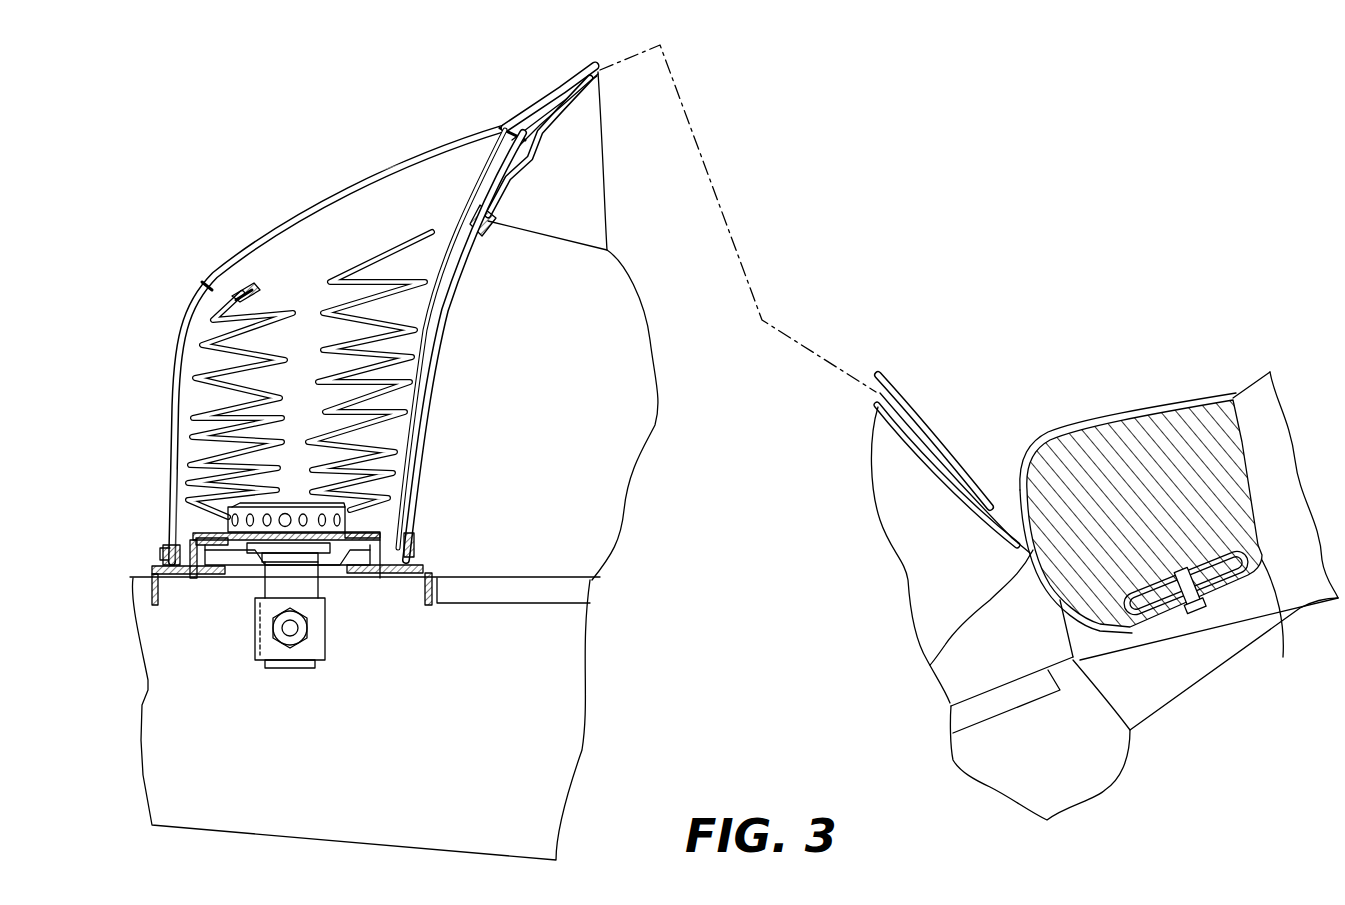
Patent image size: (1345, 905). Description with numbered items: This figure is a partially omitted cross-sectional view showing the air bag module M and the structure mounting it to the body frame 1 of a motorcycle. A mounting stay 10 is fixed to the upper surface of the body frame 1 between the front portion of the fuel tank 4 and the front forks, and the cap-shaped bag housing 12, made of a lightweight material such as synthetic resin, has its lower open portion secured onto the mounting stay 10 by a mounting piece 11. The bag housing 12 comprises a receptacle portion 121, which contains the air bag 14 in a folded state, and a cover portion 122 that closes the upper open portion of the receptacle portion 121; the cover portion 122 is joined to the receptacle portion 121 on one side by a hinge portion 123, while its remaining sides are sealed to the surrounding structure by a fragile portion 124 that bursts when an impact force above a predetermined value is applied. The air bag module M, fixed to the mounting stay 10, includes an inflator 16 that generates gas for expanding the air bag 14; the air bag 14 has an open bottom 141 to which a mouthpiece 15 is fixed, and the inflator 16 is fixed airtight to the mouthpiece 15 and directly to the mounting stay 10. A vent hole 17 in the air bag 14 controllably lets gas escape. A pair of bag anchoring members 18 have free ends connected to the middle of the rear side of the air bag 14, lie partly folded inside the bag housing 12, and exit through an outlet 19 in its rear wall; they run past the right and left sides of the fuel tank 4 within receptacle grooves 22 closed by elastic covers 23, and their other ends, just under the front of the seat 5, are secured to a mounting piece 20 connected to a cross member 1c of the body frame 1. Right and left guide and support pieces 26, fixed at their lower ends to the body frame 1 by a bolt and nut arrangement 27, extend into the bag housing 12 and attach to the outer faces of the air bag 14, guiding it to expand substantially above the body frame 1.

The body frame 1 is at (388, 738).
The cross member 1c is at (1195, 676).
The fuel tank 4 is at (523, 418).
The seat 5 is at (1148, 400).
The mounting stay 10 is at (418, 588).
The mounting piece 11 is at (157, 580).
The bag housing 12 is at (168, 392).
The receptacle portion 121 is at (176, 498).
The cover portion 122 is at (326, 197).
The hinge portion 123 is at (205, 279).
The fragile portion 124 is at (517, 128).
The air bag 14 is at (292, 268).
The open bottom 141 is at (250, 542).
The mouthpiece 15 is at (210, 546).
The inflator 16 is at (328, 548).
The vent hole 17 is at (240, 296).
The bag anchoring member 18 is at (456, 224).
The outlet 19 is at (508, 170).
The mounting piece 20 is at (1205, 584).
The receptacle groove 22 is at (546, 140).
The cover 23 is at (560, 92).
The guide and support piece 26 is at (305, 600).
The bolt and nut arrangement 27 is at (288, 642).
The air bag module M is at (396, 500).